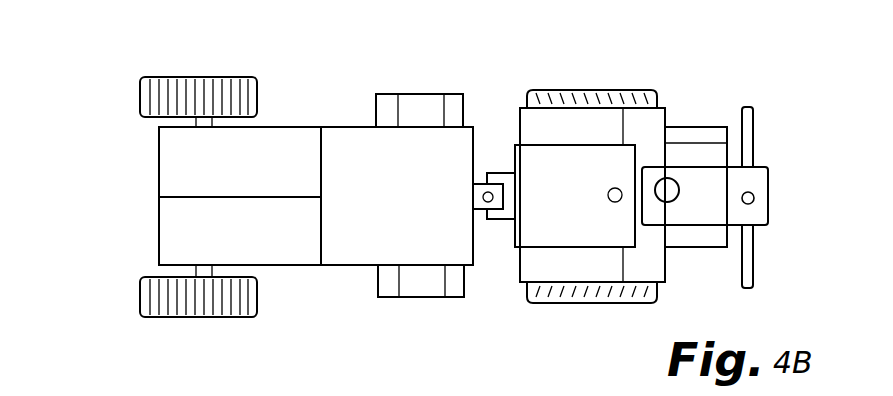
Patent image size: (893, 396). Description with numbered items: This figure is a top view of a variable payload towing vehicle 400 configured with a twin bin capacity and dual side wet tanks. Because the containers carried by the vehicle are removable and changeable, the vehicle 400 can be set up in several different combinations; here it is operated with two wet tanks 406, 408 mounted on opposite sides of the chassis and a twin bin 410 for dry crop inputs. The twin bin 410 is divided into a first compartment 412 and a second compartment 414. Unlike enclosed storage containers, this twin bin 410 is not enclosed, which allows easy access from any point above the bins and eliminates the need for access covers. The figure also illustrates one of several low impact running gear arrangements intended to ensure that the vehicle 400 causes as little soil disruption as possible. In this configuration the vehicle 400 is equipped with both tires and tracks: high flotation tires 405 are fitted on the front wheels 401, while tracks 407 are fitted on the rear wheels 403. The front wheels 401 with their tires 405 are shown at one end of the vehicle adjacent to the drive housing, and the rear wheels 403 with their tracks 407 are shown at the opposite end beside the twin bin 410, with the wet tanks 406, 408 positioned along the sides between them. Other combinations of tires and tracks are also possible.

The variable payload vehicle 400 is at (716, 90).
The front wheels 401 is at (585, 74).
The rear wheels 403 is at (200, 70).
The high flotation tires 405 is at (612, 84).
The wet tank 406 is at (413, 92).
The tracks 407 is at (245, 75).
The wet tank 408 is at (430, 298).
The twin bin 410 is at (290, 116).
The first compartment 412 is at (272, 178).
The second compartment 414 is at (445, 177).